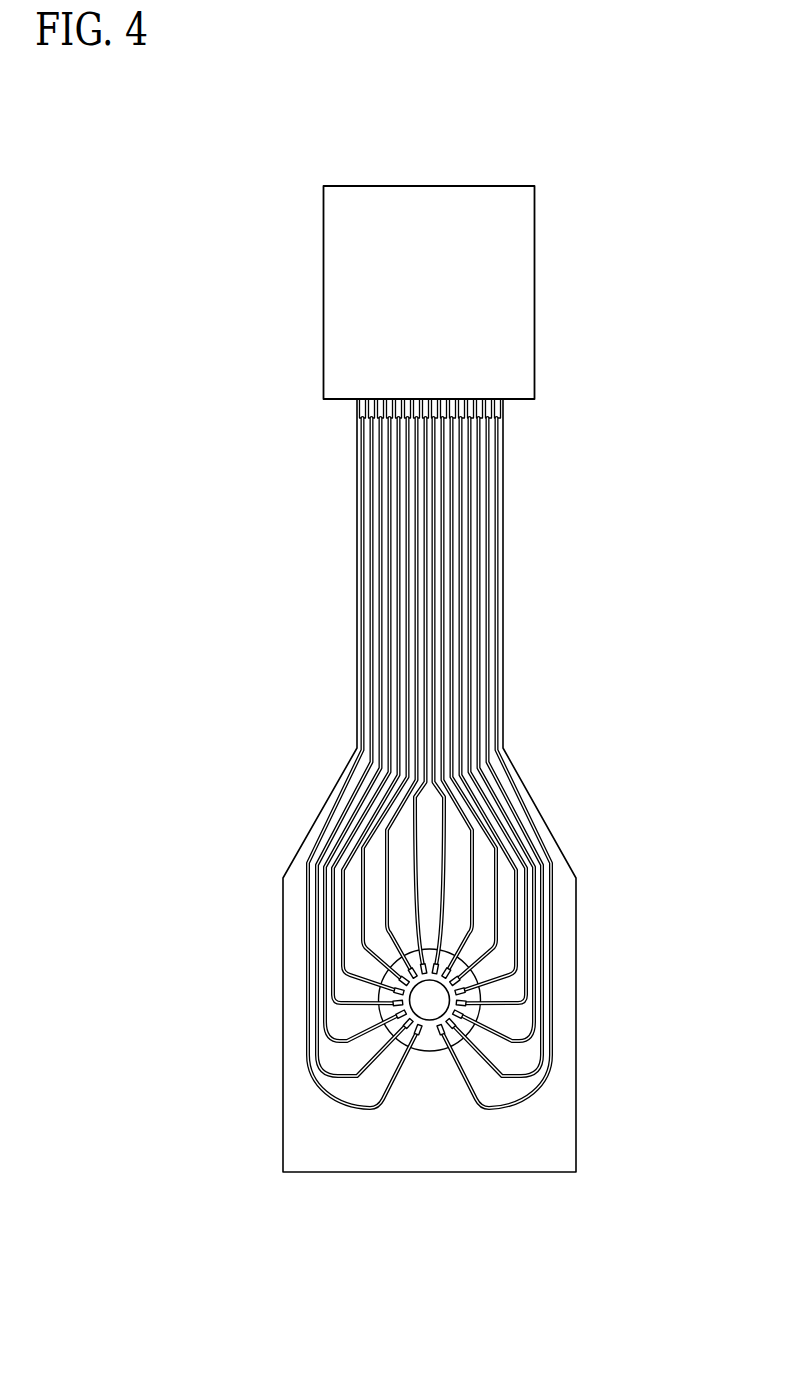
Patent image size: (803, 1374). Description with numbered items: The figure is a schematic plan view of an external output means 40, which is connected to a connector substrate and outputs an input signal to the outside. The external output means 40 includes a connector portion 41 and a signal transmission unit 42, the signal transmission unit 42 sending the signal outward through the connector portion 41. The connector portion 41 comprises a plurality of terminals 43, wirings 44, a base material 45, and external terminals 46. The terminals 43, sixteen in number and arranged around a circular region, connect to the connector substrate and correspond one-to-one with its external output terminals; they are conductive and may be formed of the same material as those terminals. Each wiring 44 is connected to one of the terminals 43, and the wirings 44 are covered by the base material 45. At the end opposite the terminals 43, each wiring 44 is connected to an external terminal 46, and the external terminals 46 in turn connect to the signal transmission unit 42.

The external output means 40 is at (344, 163).
The connector portion 41 is at (329, 1184).
The signal transmission unit 42 is at (505, 278).
The terminals 43 is at (457, 1013).
The wirings 44 is at (510, 810).
The base material 45 is at (430, 1132).
The external terminals 46 is at (475, 403).